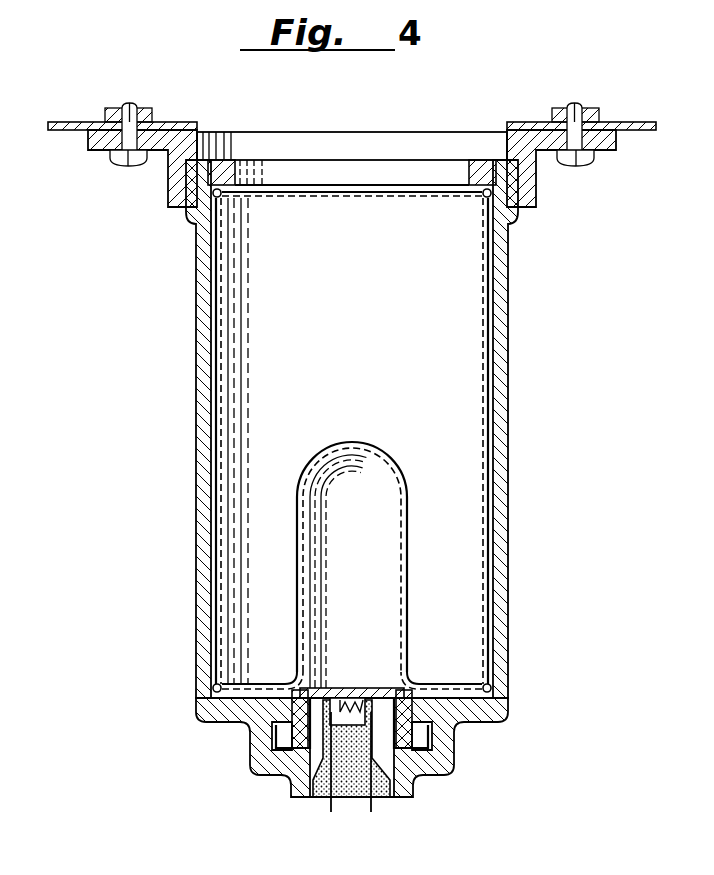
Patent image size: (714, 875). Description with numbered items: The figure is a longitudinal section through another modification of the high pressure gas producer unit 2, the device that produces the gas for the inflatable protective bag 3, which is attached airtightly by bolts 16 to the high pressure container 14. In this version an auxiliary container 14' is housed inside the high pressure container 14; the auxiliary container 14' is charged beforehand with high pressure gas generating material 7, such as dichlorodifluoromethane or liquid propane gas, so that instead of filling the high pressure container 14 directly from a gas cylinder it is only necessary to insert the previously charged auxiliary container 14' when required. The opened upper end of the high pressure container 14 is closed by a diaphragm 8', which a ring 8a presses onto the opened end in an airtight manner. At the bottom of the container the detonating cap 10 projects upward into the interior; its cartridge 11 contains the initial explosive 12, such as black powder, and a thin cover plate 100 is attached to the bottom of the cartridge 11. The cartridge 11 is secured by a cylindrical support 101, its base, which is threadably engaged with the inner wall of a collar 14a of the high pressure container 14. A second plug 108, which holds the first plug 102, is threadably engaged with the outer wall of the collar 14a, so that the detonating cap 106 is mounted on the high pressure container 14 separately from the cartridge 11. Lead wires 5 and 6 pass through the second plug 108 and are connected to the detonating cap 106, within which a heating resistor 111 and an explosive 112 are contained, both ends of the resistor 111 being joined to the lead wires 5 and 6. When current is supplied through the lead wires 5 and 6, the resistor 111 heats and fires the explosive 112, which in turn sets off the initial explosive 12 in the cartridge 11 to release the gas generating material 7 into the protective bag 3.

The high pressure gas producer unit 2 is at (141, 307).
The inflatable protective bag 3 is at (62, 131).
The lead wire 5 is at (328, 802).
The lead wire 6 is at (374, 806).
The gas generating material 7 is at (470, 288).
The diaphragm 8' is at (352, 146).
The ring 8a is at (235, 162).
The detonating cap 10 is at (362, 428).
The cartridge 11 is at (395, 525).
The initial explosive 12 is at (328, 525).
The high pressure container 14 is at (166, 429).
The auxiliary container 14' is at (529, 429).
The collar 14a is at (432, 733).
The bolt 16 is at (122, 153).
The thin cover plate 100 is at (357, 696).
The cylindrical support 101 is at (410, 702).
The first plug 102 is at (400, 797).
The detonating cap 106 is at (299, 668).
The second plug 108 is at (455, 760).
The heating resistor 111 is at (344, 700).
The explosive 112 is at (300, 690).